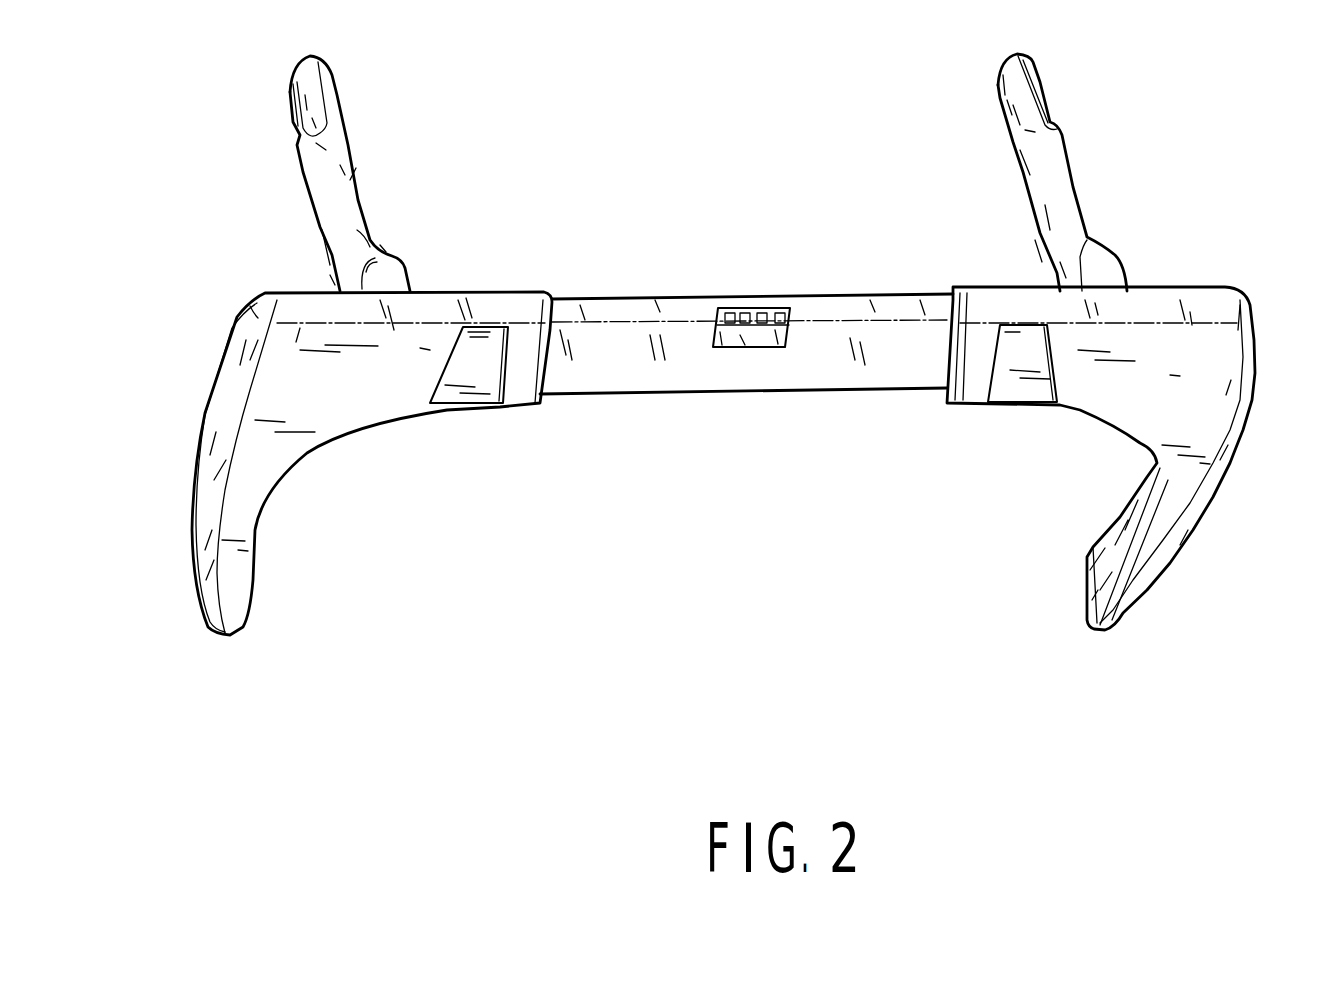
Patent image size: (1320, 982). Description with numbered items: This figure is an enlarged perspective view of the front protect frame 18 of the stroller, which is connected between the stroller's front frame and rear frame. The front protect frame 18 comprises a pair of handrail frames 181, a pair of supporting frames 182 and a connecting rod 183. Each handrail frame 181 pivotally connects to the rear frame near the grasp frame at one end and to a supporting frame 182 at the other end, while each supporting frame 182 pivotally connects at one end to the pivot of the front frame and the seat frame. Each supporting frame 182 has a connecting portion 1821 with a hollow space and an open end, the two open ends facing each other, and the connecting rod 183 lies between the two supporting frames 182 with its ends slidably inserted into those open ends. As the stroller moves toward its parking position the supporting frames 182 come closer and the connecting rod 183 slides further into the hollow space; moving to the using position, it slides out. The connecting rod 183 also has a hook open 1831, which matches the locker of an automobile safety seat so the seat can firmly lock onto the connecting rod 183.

The front protect frame 18 is at (723, 426).
The handrail frame 181 is at (1047, 170).
The supporting frame 182 is at (250, 583).
The connecting portion 1821 is at (1010, 287).
The connecting rod 183 is at (723, 373).
The hook open 1831 is at (753, 340).